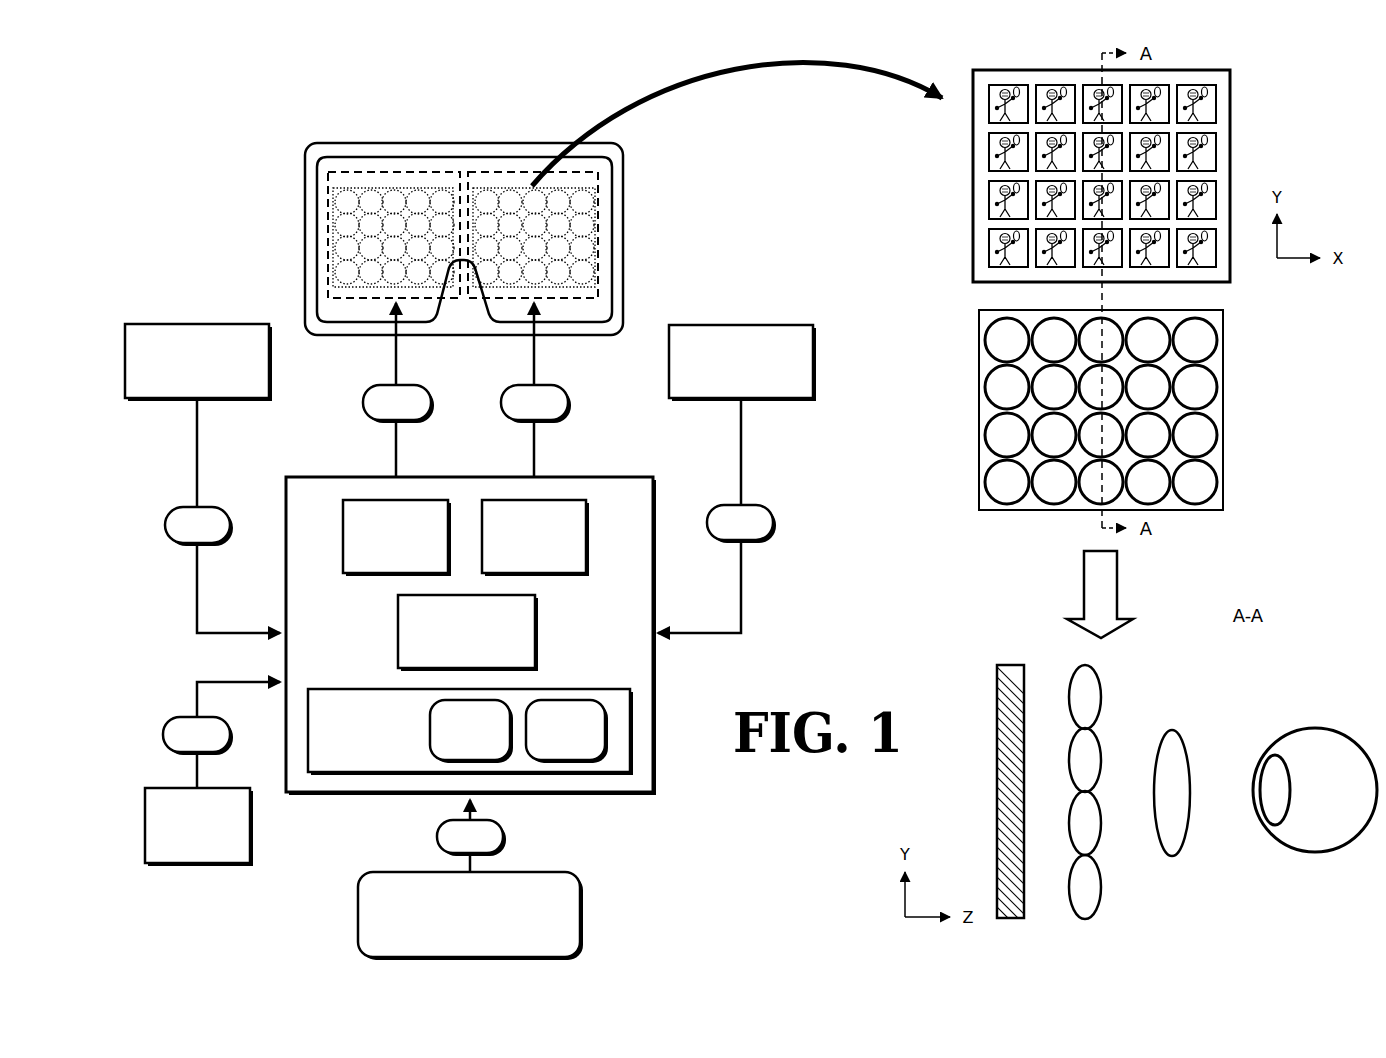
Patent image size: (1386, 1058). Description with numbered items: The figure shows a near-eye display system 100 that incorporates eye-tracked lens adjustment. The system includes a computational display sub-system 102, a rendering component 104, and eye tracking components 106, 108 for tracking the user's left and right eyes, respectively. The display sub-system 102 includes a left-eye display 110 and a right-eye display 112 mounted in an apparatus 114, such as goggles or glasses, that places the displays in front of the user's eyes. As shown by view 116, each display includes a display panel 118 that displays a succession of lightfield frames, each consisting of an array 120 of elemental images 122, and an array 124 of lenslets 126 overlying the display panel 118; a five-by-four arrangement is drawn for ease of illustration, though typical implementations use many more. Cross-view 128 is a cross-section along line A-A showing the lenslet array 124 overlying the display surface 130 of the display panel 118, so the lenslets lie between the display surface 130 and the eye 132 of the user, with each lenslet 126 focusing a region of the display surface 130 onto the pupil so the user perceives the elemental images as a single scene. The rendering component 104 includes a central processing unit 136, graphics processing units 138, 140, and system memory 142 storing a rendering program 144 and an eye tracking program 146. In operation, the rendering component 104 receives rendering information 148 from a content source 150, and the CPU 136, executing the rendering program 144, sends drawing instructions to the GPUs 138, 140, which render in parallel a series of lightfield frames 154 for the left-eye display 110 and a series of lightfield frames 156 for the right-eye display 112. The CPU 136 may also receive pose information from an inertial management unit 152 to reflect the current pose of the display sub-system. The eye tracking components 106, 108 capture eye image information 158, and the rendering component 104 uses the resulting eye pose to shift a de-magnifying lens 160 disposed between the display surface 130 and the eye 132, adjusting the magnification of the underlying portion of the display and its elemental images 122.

The near-eye display system 100 is at (236, 254).
The computational display sub-system 102 is at (463, 204).
The rendering component 104 is at (471, 636).
The eye tracking component 106 is at (198, 362).
The eye tracking component 108 is at (742, 363).
The left-eye display 110 is at (360, 170).
The right-eye display 112 is at (515, 170).
The apparatus 114 is at (623, 256).
The view 116 is at (1156, 168).
The display panel 118 is at (970, 178).
The array of elemental images 120 is at (1207, 78).
The elemental image 122 is at (1217, 157).
The lenslet array 124 is at (1102, 614).
The lenslet 126 is at (1220, 390).
The cross-view 128 is at (1315, 782).
The display surface 130 is at (1029, 886).
The eye 132 is at (1300, 852).
The central processing unit 136 is at (468, 633).
The graphics processing unit 138 is at (397, 538).
The graphics processing unit 140 is at (535, 538).
The system memory 142 is at (470, 732).
The rendering program 144 is at (471, 731).
The eye tracking program 146 is at (567, 731).
The rendering information 148 is at (471, 836).
The content source 150 is at (373, 821).
The inertial management unit 152 is at (199, 827).
The lightfield frames 154 is at (398, 401).
The lightfield frames 156 is at (536, 401).
The eye image information 158 is at (470, 515).
The de-magnifying lens 160 is at (1175, 855).